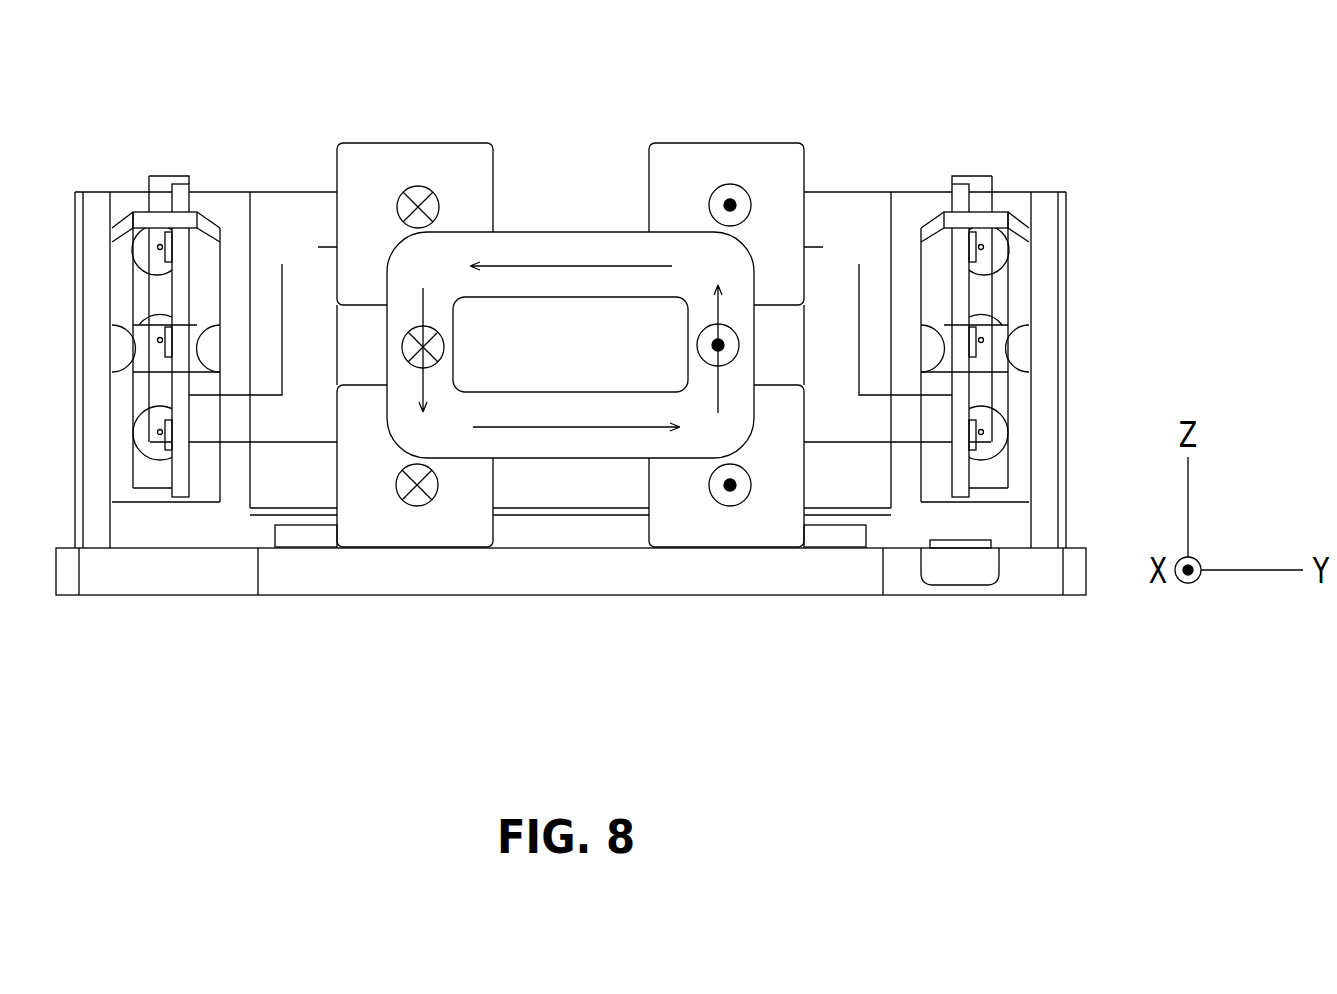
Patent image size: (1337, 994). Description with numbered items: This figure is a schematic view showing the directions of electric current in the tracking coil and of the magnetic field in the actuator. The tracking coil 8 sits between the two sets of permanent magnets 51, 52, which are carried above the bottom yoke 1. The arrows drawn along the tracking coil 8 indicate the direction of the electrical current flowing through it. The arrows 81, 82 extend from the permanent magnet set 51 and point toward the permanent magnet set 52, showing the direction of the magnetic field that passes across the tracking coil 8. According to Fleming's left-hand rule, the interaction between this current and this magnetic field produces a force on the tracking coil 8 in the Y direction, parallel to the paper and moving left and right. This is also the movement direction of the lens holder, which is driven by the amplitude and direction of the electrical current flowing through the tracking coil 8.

The bottom yoke 1 is at (157, 585).
The tracking coil 8 is at (545, 478).
The arrow 81 is at (710, 362).
The arrow 82 is at (404, 362).
The permanent magnet set 51 is at (713, 143).
The permanent magnet set 52 is at (370, 143).